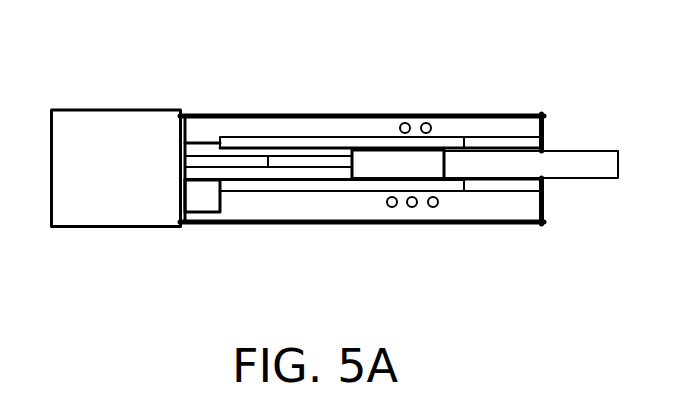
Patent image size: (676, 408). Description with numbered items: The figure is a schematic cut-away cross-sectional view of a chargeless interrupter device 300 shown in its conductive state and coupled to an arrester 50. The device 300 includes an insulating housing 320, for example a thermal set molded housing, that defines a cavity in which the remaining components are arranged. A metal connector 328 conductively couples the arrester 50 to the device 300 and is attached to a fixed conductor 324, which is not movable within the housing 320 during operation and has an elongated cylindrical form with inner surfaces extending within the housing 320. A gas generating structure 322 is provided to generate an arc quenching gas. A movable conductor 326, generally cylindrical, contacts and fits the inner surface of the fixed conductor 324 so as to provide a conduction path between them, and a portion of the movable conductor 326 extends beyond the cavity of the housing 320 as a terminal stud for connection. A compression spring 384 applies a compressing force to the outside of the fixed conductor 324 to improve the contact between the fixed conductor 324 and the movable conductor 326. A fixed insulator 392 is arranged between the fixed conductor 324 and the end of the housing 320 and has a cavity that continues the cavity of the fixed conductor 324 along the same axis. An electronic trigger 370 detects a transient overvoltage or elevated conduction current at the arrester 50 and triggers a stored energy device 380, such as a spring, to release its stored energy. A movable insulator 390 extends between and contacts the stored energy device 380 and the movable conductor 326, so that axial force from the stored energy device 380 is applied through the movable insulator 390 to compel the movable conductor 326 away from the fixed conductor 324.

The arrester 50 is at (117, 125).
The chargeless interrupter device 300 is at (373, 154).
The housing 320 is at (233, 113).
The gas generating structure 322 is at (193, 205).
The fixed conductor 324 is at (315, 138).
The movable conductor 326 is at (498, 167).
The metal connector 328 is at (200, 143).
The electronic trigger 370 is at (248, 163).
The stored energy device 380 is at (313, 162).
The compression spring 384 is at (425, 117).
The movable insulator 390 is at (377, 165).
The fixed insulator 392 is at (512, 143).